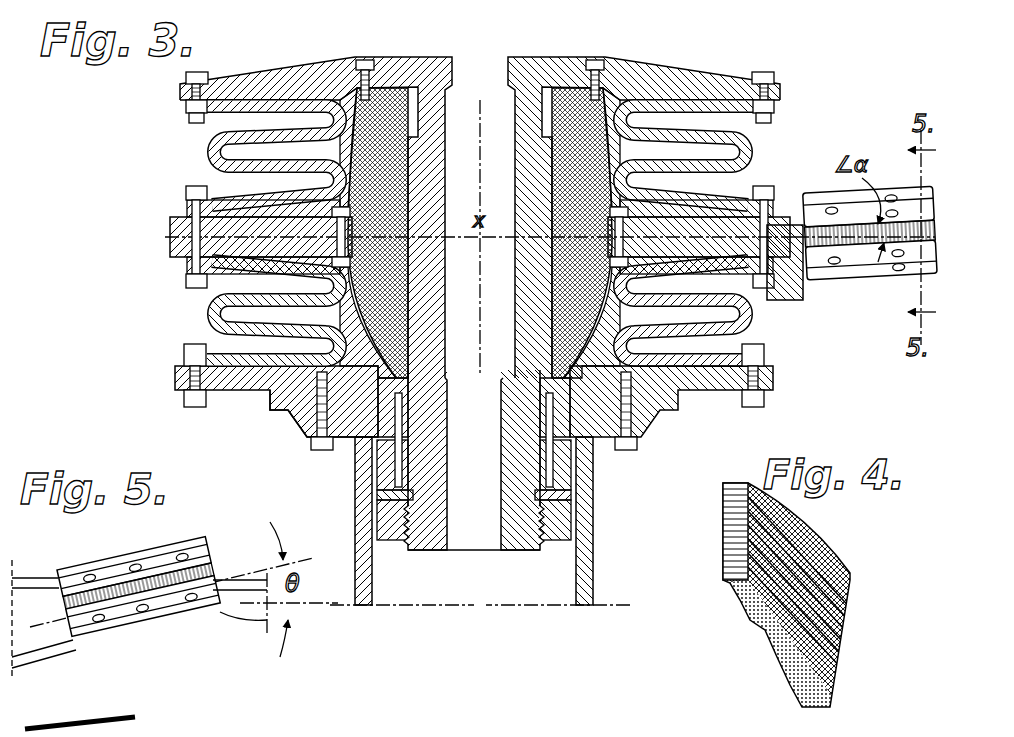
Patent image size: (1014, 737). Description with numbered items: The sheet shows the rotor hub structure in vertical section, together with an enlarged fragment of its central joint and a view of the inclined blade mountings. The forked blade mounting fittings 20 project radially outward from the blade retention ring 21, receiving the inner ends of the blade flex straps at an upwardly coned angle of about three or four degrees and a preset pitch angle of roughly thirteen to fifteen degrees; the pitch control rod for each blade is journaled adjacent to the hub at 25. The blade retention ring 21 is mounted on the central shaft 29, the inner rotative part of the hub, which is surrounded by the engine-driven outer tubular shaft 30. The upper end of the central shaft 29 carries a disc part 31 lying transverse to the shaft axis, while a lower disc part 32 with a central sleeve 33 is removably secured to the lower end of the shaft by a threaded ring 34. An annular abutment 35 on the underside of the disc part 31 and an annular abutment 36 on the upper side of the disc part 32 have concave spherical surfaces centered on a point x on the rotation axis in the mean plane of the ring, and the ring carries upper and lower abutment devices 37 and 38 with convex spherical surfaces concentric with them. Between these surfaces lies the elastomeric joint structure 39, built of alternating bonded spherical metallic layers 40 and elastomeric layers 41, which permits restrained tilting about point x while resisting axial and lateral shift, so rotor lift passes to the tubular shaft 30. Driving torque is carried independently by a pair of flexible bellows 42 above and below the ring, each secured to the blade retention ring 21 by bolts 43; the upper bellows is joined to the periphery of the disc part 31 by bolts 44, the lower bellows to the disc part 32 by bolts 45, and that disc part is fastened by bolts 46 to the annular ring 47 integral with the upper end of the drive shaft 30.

In FIG. 3, the forked blade mounting fittings 20 is at (838, 293).
In FIG. 5, the forked blade mounting fittings 20 is at (150, 555).
In FIG. 3, the blade retention ring 21 is at (183, 234).
In FIG. 5, the blade retention ring 21 is at (234, 626).
In FIG. 3, the journal for pitch control rod 25 is at (800, 252).
In FIG. 5, the journal for pitch control rod 25 is at (58, 646).
In FIG. 3, the central shaft 29 is at (418, 462).
In FIG. 3, the outer tubular shaft 30 is at (583, 583).
In FIG. 3, the disc part 31 is at (417, 60).
In FIG. 3, the disc part 32 is at (184, 381).
In FIG. 3, the central sleeve 33 is at (553, 481).
In FIG. 3, the threaded ring 34 is at (557, 538).
In FIG. 3, the annular abutment 35 is at (358, 100).
In FIG. 3, the annular abutment 36 is at (379, 377).
In FIG. 3, the upper abutment device 37 is at (380, 192).
In FIG. 3, the lower abutment device 38 is at (385, 290).
In FIG. 3, the elastomeric joint structure 39 is at (548, 362).
In FIG. 4, the elastomeric joint structure 39 is at (842, 547).
In FIG. 4, the metallic layers 40 is at (840, 633).
In FIG. 4, the elastomeric layers 41 is at (723, 513).
In FIG. 3, the flexible bellows 42 is at (217, 150).
In FIG. 3, the bolts 43 is at (188, 192).
In FIG. 3, the bolts 44 is at (188, 78).
In FIG. 3, the bolts 45 is at (184, 357).
In FIG. 3, the bolts 46 is at (314, 449).
In FIG. 3, the annular ring 47 is at (276, 418).